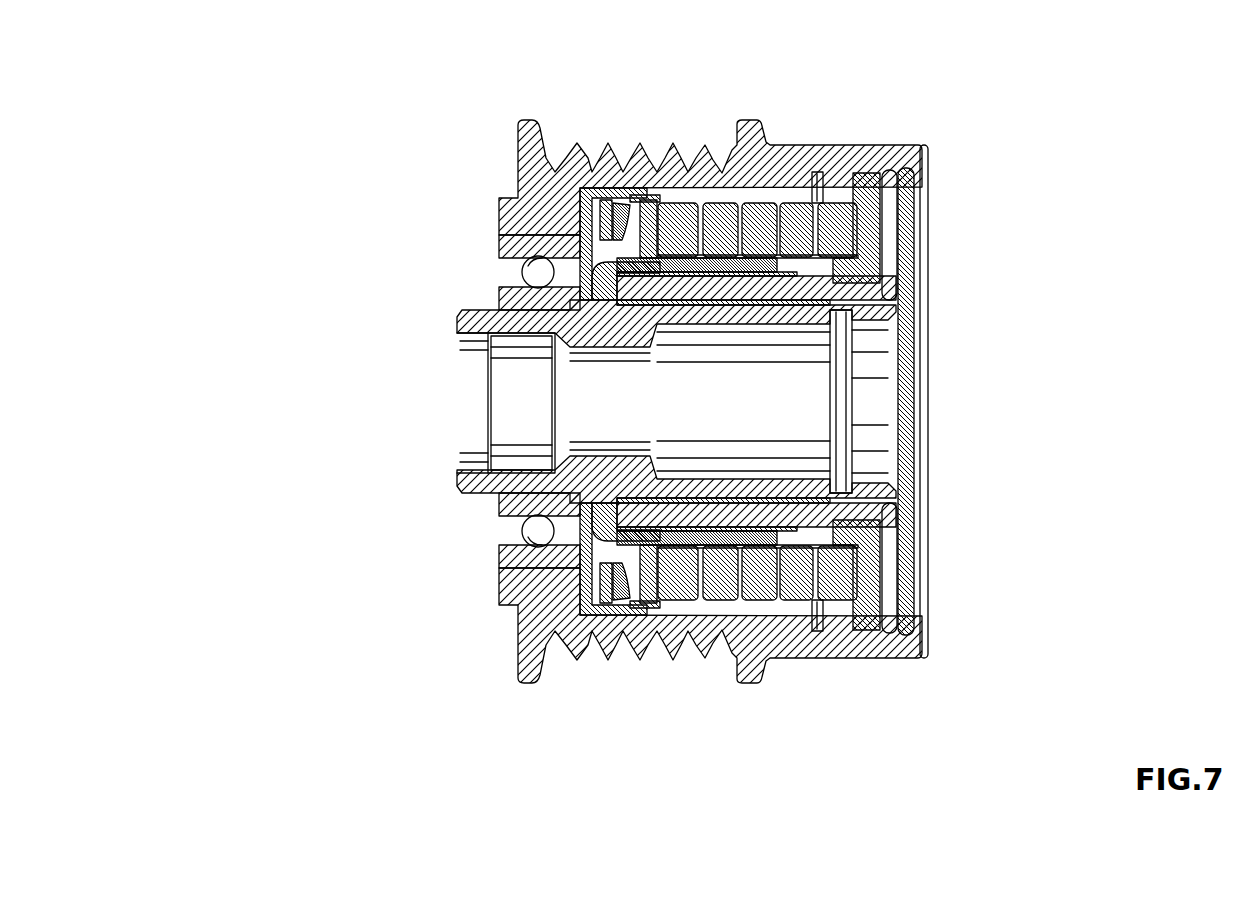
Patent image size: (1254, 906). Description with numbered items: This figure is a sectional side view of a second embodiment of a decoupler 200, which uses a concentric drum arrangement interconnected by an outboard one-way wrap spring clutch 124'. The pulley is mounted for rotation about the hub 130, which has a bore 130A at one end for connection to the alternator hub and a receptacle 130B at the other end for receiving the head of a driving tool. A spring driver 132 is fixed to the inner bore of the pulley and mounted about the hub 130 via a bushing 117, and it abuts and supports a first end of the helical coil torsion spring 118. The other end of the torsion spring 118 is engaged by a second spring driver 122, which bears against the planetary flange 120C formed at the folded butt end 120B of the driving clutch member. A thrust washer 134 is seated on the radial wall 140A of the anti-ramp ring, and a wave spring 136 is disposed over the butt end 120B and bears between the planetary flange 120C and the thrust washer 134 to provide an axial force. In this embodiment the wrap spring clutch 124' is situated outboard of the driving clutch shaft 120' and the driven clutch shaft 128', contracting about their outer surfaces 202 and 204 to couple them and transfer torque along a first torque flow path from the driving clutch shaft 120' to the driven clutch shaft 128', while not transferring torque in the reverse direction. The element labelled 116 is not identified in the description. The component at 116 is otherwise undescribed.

The decoupler 200 is at (457, 68).
The cover 116 is at (913, 322).
The hub 130 is at (470, 490).
The bore 130A is at (457, 420).
The receptacle 130B is at (890, 382).
The driven clutch shaft 128' is at (756, 510).
The driving clutch shaft 120' is at (707, 508).
The outer surface 204 is at (738, 526).
The outer surface 202 is at (672, 543).
The radial wall 140A is at (588, 585).
The folded butt end 120B is at (593, 540).
The thrust washer 134 is at (593, 593).
The wave spring 136 is at (598, 597).
The planetary flange 120C is at (637, 597).
The spring driver 122 is at (647, 603).
The helical coil torsion spring 118 is at (867, 578).
The one-way wrap spring clutch 124' is at (806, 440).
The bushing 117 is at (880, 527).
The spring driver 132 is at (893, 562).